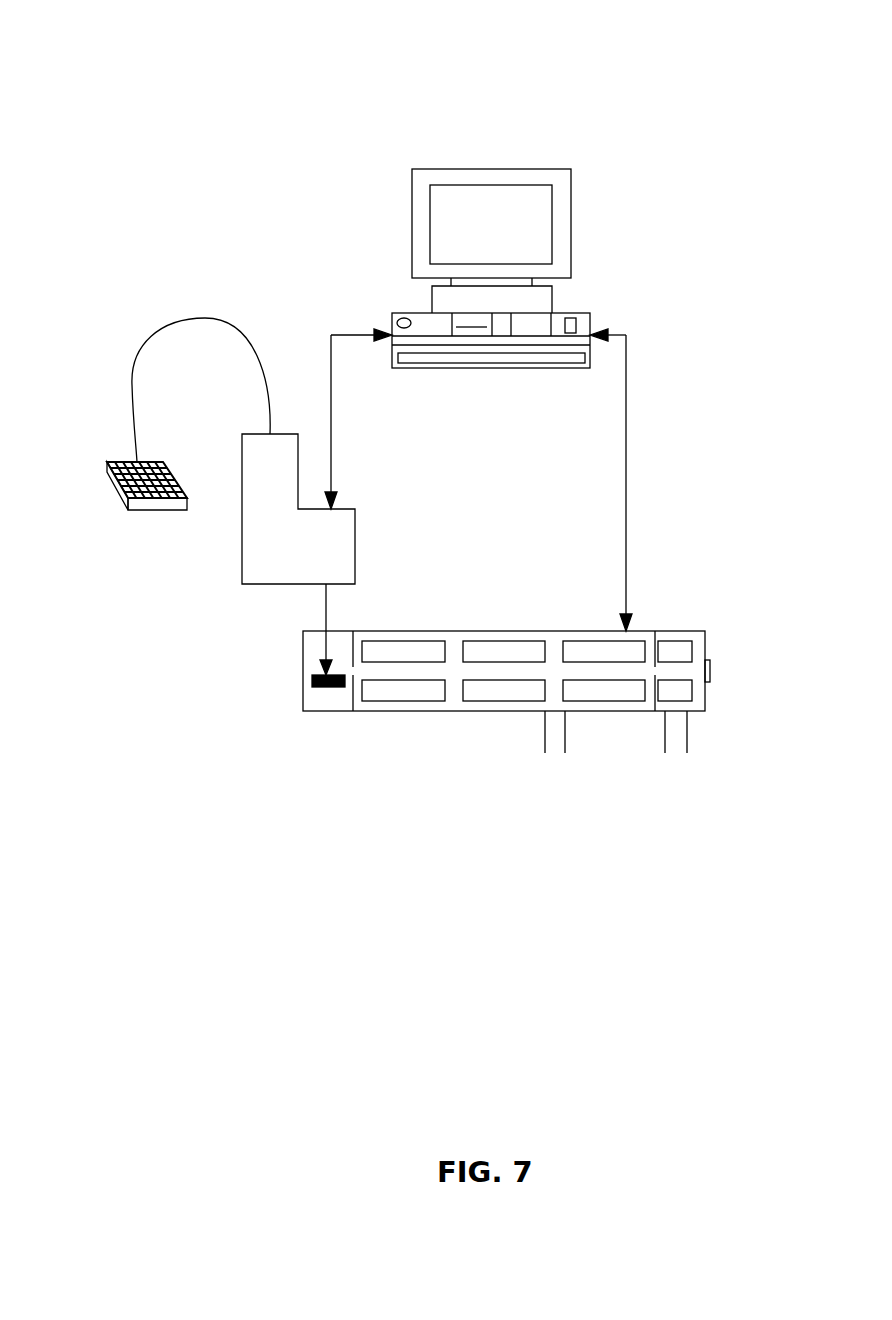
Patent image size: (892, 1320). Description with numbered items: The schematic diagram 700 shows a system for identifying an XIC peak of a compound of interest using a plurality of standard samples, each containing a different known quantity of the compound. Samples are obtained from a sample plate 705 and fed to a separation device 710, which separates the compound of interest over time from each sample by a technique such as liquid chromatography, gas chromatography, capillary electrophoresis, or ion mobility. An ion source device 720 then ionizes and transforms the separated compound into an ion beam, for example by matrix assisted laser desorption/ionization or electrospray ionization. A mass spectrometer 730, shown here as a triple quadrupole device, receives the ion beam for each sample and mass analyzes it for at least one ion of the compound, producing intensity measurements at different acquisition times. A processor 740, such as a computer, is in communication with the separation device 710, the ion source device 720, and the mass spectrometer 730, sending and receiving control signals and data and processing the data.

The schematic diagram 700 is at (341, 947).
The sample plate 705 is at (128, 510).
The separation device 710 is at (243, 565).
The ion source device 720 is at (325, 711).
The mass spectrometer 730 is at (515, 711).
The processor 740 is at (492, 169).